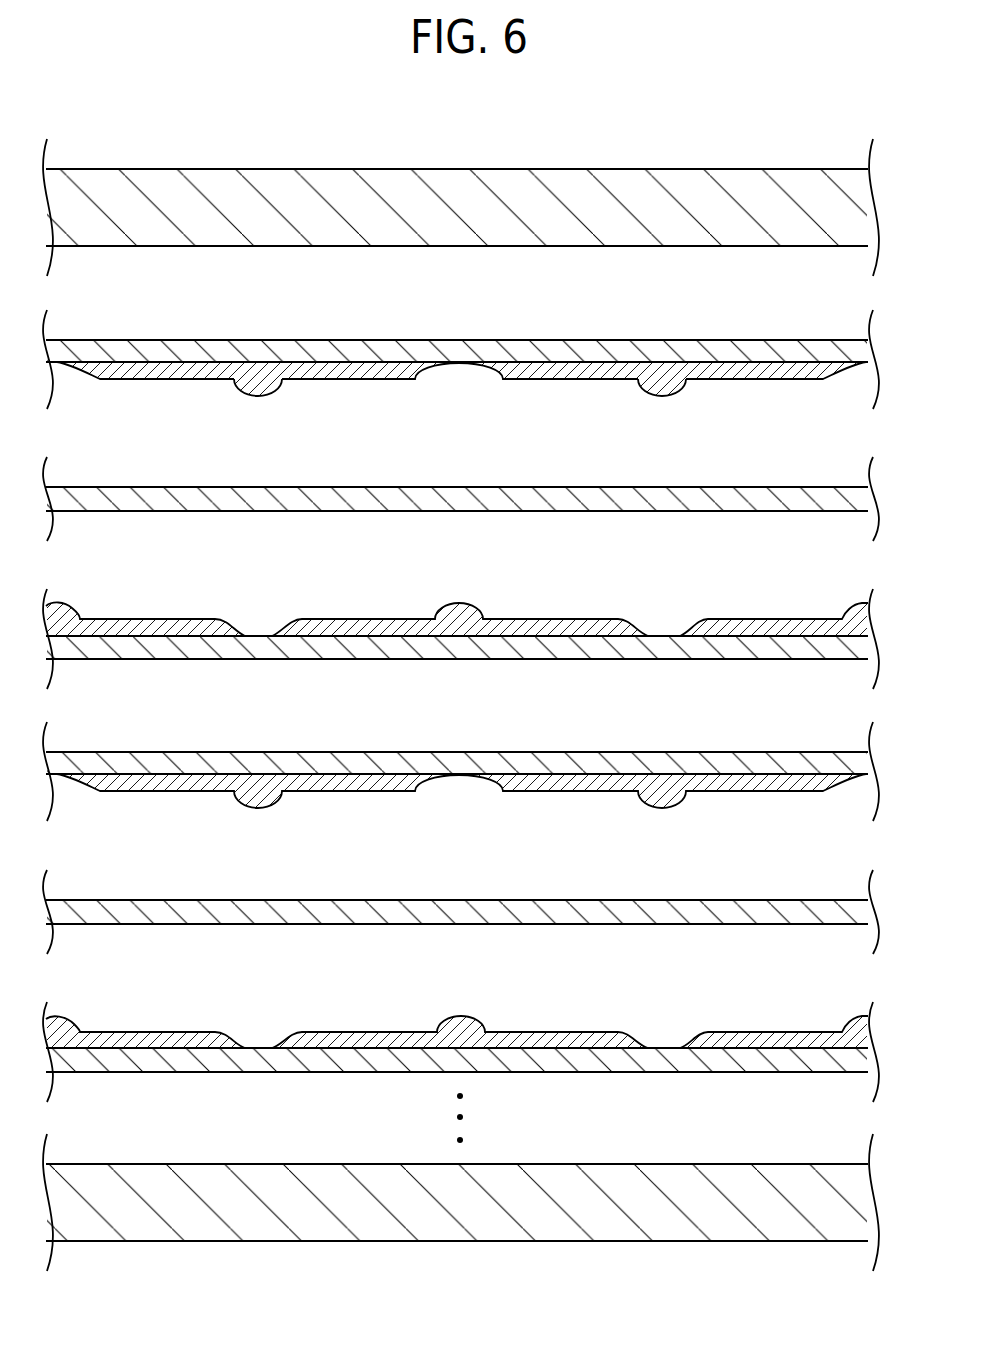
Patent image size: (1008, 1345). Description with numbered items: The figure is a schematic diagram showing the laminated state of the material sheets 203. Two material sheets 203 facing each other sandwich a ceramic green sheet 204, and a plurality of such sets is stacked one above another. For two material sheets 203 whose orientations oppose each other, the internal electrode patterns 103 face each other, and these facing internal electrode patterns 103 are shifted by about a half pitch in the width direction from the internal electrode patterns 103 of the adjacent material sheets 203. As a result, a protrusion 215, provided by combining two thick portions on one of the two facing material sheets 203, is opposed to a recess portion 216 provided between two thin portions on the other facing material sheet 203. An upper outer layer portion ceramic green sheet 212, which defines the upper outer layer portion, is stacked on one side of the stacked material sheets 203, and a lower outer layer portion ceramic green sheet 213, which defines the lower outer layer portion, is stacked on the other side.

The upper outer layer portion ceramic green sheet 212 is at (747, 177).
The material sheet 203 is at (747, 345).
The ceramic green sheet 204 is at (747, 490).
The protrusion 215 is at (252, 395).
The internal electrode pattern 103 is at (667, 389).
The recess portion 216 is at (233, 627).
The lower outer layer portion ceramic green sheet 213 is at (747, 1170).